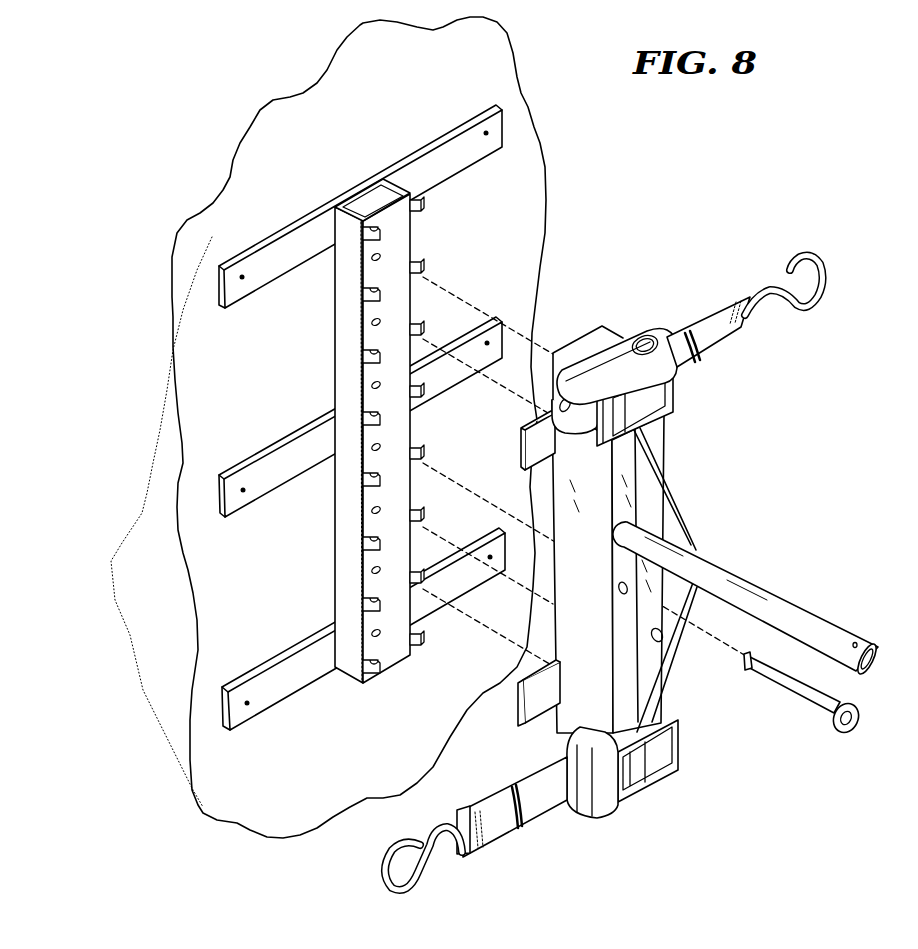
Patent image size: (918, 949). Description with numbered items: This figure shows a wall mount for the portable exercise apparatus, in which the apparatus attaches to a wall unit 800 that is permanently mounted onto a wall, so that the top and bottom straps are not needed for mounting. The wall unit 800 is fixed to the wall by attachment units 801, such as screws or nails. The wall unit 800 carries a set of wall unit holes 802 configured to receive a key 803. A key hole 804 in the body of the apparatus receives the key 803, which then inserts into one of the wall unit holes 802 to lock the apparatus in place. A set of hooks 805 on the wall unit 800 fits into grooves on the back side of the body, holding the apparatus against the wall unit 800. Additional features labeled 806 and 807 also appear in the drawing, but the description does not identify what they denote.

The wall unit 800 is at (111, 561).
The attachment units 801 is at (242, 281).
The wall unit holes 802 is at (424, 268).
The key 803 is at (790, 694).
The key hole 804 is at (617, 589).
The hooks 805 is at (361, 601).
The apertures 806 is at (380, 258).
The channel bracket 807 is at (335, 333).